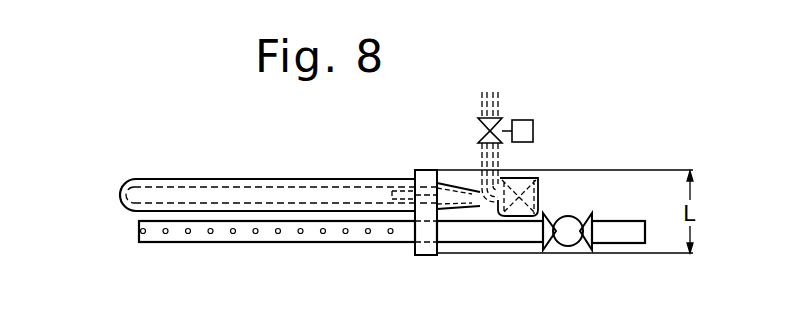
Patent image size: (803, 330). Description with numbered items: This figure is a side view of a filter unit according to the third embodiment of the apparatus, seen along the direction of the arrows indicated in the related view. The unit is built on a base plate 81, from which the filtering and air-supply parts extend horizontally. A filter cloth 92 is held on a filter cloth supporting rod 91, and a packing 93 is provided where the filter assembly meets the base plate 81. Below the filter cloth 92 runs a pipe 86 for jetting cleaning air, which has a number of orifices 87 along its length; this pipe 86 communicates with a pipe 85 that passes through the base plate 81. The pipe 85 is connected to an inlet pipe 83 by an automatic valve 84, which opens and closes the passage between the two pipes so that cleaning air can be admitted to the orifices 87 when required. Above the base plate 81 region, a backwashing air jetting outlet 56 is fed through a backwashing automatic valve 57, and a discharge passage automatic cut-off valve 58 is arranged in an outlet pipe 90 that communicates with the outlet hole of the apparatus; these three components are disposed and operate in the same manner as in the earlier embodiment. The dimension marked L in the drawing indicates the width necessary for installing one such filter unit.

The filter cloth supporting rod 91 is at (144, 184).
The filter cloth 92 is at (262, 179).
The packing 93 is at (424, 170).
The backwashing automatic valve 57 is at (498, 122).
The backwashing air jetting outlet 56 is at (499, 168).
The discharge passage automatic cut-off valve 58 is at (539, 190).
The outlet pipe 90 is at (538, 213).
The orifices 87 is at (228, 240).
The pipe for jetting cleaning air 86 is at (299, 243).
The base plate 81 is at (424, 256).
The pipe 85 is at (499, 244).
The automatic valve 84 is at (566, 250).
The inlet pipe 83 is at (621, 243).